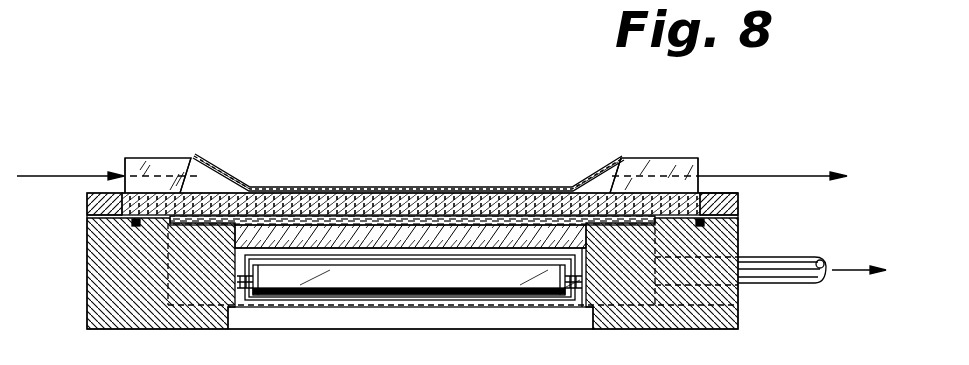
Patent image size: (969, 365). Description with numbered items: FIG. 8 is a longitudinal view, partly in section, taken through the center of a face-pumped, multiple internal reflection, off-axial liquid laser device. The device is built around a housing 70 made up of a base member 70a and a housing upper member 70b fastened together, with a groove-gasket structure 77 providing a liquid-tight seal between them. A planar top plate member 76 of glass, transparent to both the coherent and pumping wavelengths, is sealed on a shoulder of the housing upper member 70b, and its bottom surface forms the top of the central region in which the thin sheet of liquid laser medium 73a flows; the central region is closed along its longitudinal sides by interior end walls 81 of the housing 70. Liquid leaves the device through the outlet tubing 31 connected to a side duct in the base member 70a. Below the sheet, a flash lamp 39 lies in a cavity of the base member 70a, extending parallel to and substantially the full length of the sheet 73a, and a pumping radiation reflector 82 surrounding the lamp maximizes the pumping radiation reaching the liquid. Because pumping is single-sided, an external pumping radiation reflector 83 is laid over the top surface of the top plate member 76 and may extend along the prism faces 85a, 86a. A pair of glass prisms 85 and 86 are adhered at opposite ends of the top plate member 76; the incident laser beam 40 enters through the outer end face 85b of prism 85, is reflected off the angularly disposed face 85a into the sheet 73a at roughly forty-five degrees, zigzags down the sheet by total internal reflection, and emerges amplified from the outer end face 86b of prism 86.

The housing 70 is at (654, 336).
The base member 70a is at (738, 304).
The housing upper member 70b is at (744, 210).
The top plate member 76 is at (328, 192).
The sheet of liquid laser medium 73a is at (383, 193).
The external pumping radiation reflector 83 is at (466, 190).
The interior end walls 81 is at (200, 173).
The glass prism 85 is at (155, 157).
The angularly disposed face 85a is at (214, 167).
The outer end face 85b is at (125, 165).
The glass prism 86 is at (668, 157).
The prism face 86a is at (612, 160).
The outer end face 86b is at (699, 170).
The laser beam 40 is at (50, 176).
The groove-gasket structure 77 is at (133, 222).
The pumping radiation reflector 82 is at (520, 304).
The flash lamp 39 is at (550, 297).
The tubing 31 is at (786, 257).